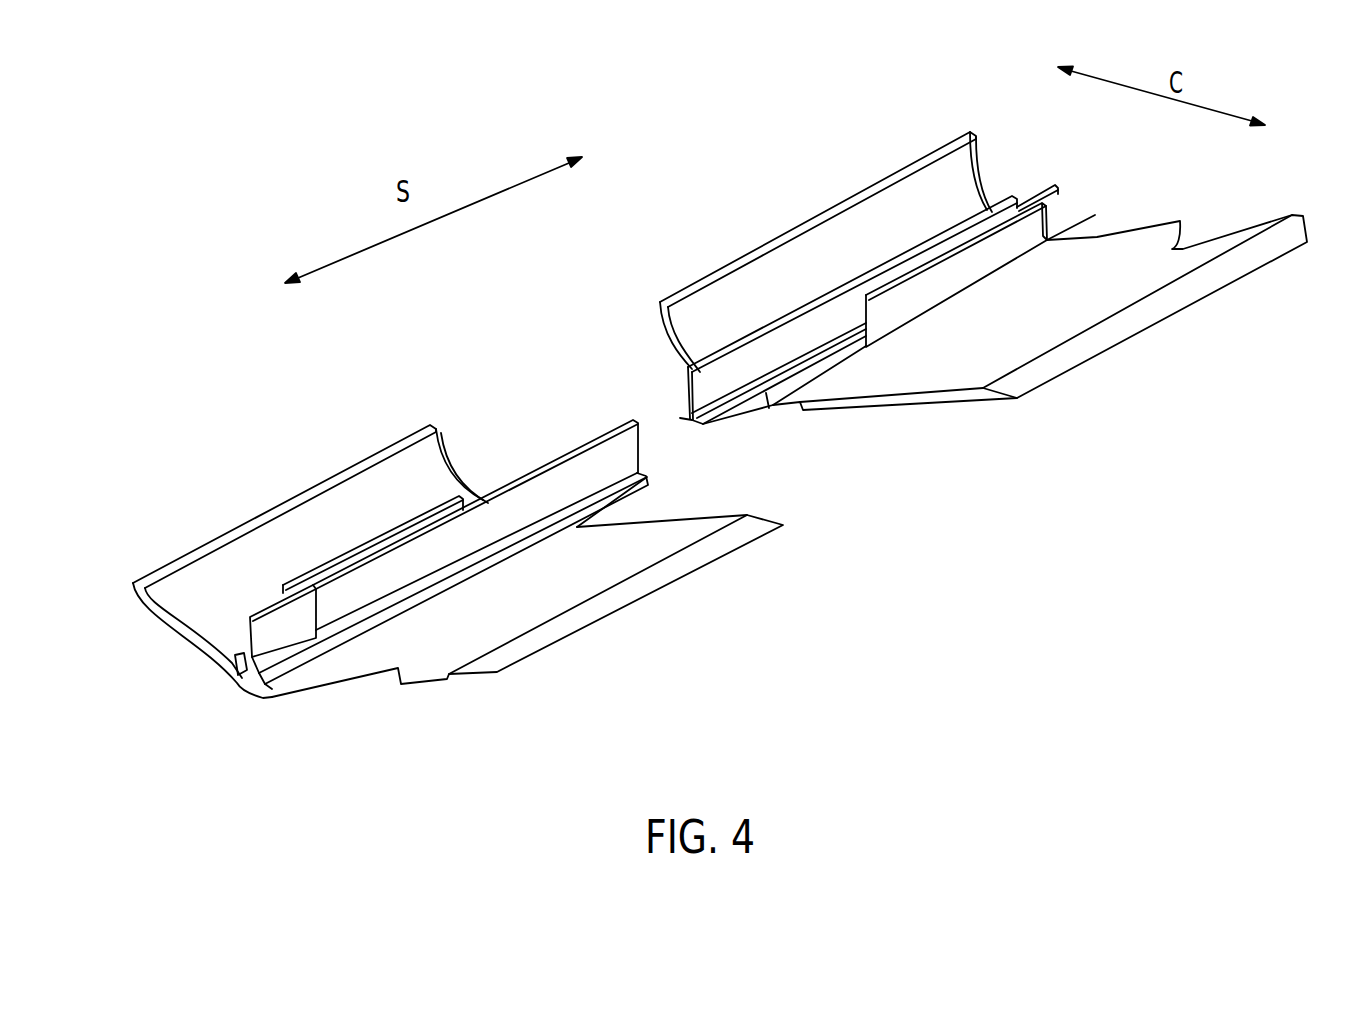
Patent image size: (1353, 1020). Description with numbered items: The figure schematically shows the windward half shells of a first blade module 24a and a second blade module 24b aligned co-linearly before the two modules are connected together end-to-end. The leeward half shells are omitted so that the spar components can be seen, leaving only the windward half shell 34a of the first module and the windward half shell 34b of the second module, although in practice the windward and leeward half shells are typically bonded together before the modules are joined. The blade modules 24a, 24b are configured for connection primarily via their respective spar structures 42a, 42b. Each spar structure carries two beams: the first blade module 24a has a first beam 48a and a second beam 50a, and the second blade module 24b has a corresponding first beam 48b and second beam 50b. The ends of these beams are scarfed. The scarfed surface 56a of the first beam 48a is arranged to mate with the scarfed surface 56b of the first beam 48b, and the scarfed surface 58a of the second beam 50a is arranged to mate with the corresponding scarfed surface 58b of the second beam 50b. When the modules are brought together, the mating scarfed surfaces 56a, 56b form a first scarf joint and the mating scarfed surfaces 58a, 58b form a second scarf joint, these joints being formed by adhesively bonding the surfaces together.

The first blade module 24a is at (458, 569).
The second blade module 24b is at (983, 292).
The windward half shell 34a is at (613, 565).
The windward half shell 34b is at (1117, 282).
The spar structure 42a is at (505, 599).
The spar structure 42b is at (993, 317).
The first beam 48a is at (297, 652).
The first beam 48b is at (1058, 238).
The second beam 50a is at (250, 667).
The second beam 50b is at (769, 402).
The scarfed surface 56a is at (629, 499).
The scarfed surface 56b is at (847, 363).
The scarfed surface 58a is at (502, 450).
The scarfed surface 58b is at (738, 436).